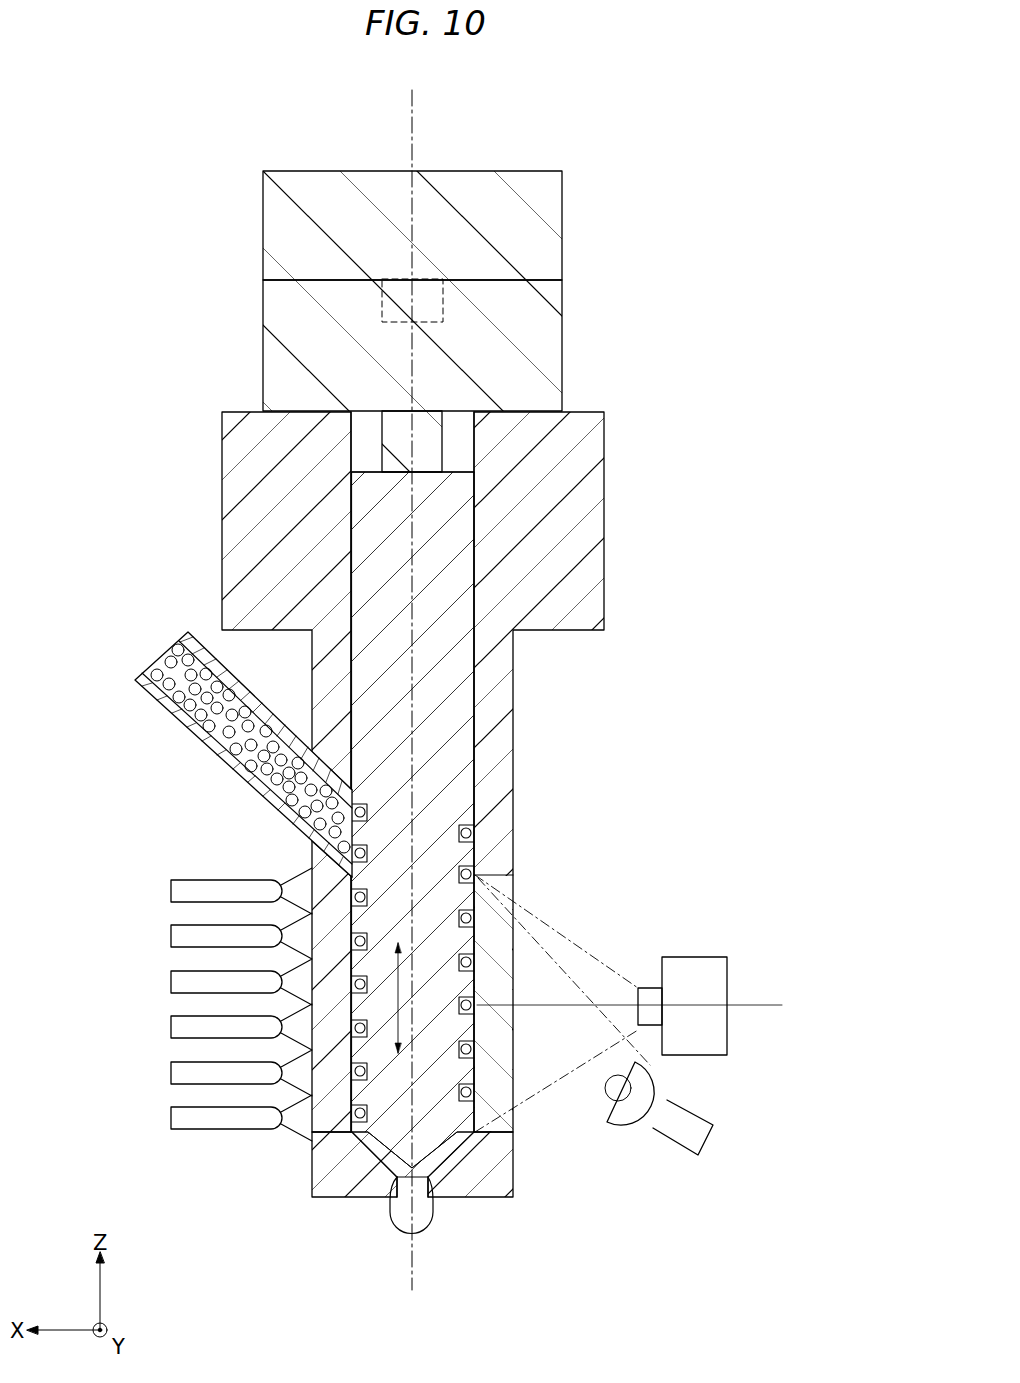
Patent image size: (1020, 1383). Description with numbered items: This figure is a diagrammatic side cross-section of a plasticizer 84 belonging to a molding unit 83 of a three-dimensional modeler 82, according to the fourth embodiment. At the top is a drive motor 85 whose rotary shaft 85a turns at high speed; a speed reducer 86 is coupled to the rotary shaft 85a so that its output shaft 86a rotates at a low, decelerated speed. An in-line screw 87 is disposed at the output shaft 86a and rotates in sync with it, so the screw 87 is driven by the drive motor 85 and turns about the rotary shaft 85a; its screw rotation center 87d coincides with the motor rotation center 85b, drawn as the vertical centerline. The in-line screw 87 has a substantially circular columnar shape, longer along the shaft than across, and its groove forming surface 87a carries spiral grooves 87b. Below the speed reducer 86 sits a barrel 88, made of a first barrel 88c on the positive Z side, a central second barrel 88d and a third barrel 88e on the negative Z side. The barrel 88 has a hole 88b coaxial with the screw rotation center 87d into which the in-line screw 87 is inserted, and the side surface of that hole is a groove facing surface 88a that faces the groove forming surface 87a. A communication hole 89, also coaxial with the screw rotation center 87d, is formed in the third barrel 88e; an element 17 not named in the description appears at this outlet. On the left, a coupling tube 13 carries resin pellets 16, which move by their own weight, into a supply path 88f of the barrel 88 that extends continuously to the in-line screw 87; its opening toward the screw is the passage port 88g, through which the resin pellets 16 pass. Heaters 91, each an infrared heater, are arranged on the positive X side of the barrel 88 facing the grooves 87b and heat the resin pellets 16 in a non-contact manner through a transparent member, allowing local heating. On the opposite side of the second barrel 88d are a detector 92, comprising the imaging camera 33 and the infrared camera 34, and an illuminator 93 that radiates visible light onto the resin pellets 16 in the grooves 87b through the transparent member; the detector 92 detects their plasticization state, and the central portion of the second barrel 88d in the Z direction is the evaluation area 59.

The plasticizer 84 is at (706, 144).
The molding unit 83 is at (798, 106).
The three-dimensional modeler 82 is at (847, 106).
The drive motor 85 is at (563, 196).
The rotary shaft 85a is at (434, 297).
The motor rotation center 85b is at (416, 100).
The speed reducer 86 is at (563, 338).
The output shaft 86a is at (422, 420).
The barrel 88 is at (446, 828).
The groove facing surface 88a is at (477, 512).
The hole 88b is at (412, 772).
The first barrel 88c is at (605, 430).
The second barrel 88d is at (514, 1103).
The third barrel 88e is at (515, 1184).
The supply path 88f is at (283, 800).
The passage port 88g is at (306, 836).
The in-line screw 87 is at (440, 715).
The groove forming surface 87a is at (477, 982).
The spiral grooves 87b is at (465, 870).
The screw rotation center 87d is at (430, 655).
The resin pellets 16 is at (187, 638).
The coupling tube 13 is at (172, 716).
The molten material droplet 17 is at (404, 1230).
The communication hole 89 is at (428, 1220).
The heaters 91 is at (178, 1118).
The evaluation area 59 is at (397, 1060).
The detector 92 is at (697, 968).
The imaging camera 33 is at (628, 1003).
The infrared camera 34 is at (628, 1003).
The illuminator 93 is at (700, 1118).